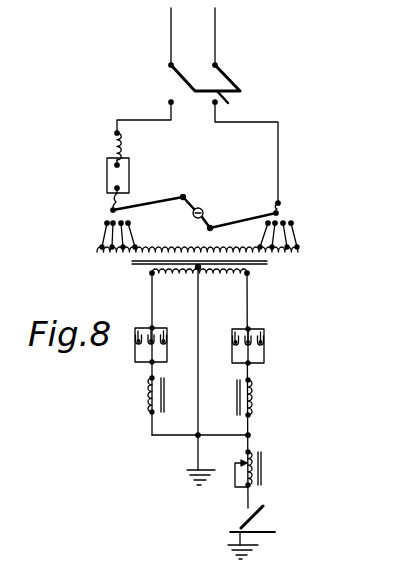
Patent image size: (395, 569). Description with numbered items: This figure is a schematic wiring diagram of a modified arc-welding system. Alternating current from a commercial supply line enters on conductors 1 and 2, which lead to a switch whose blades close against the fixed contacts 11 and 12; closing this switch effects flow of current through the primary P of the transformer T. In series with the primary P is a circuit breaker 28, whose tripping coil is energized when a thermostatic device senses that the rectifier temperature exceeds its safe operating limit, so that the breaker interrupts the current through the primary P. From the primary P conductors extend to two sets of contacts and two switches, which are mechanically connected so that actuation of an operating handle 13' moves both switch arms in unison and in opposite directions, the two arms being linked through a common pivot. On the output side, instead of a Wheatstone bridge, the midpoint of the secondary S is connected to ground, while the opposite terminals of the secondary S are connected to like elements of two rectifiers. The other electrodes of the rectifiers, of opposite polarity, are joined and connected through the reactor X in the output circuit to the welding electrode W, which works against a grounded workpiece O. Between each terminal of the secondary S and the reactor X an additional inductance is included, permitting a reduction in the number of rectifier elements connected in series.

The conductor 1 is at (172, 34).
The conductor 2 is at (216, 34).
The fixed contact 11 is at (170, 102).
The fixed contact 12 is at (216, 103).
The operating handle 13' is at (222, 192).
The circuit breaker 28 is at (130, 174).
The primary P is at (299, 253).
The transformer T is at (266, 265).
The secondary S is at (218, 277).
The reactor X is at (259, 468).
The welding electrode W is at (250, 521).
The ground O is at (264, 533).